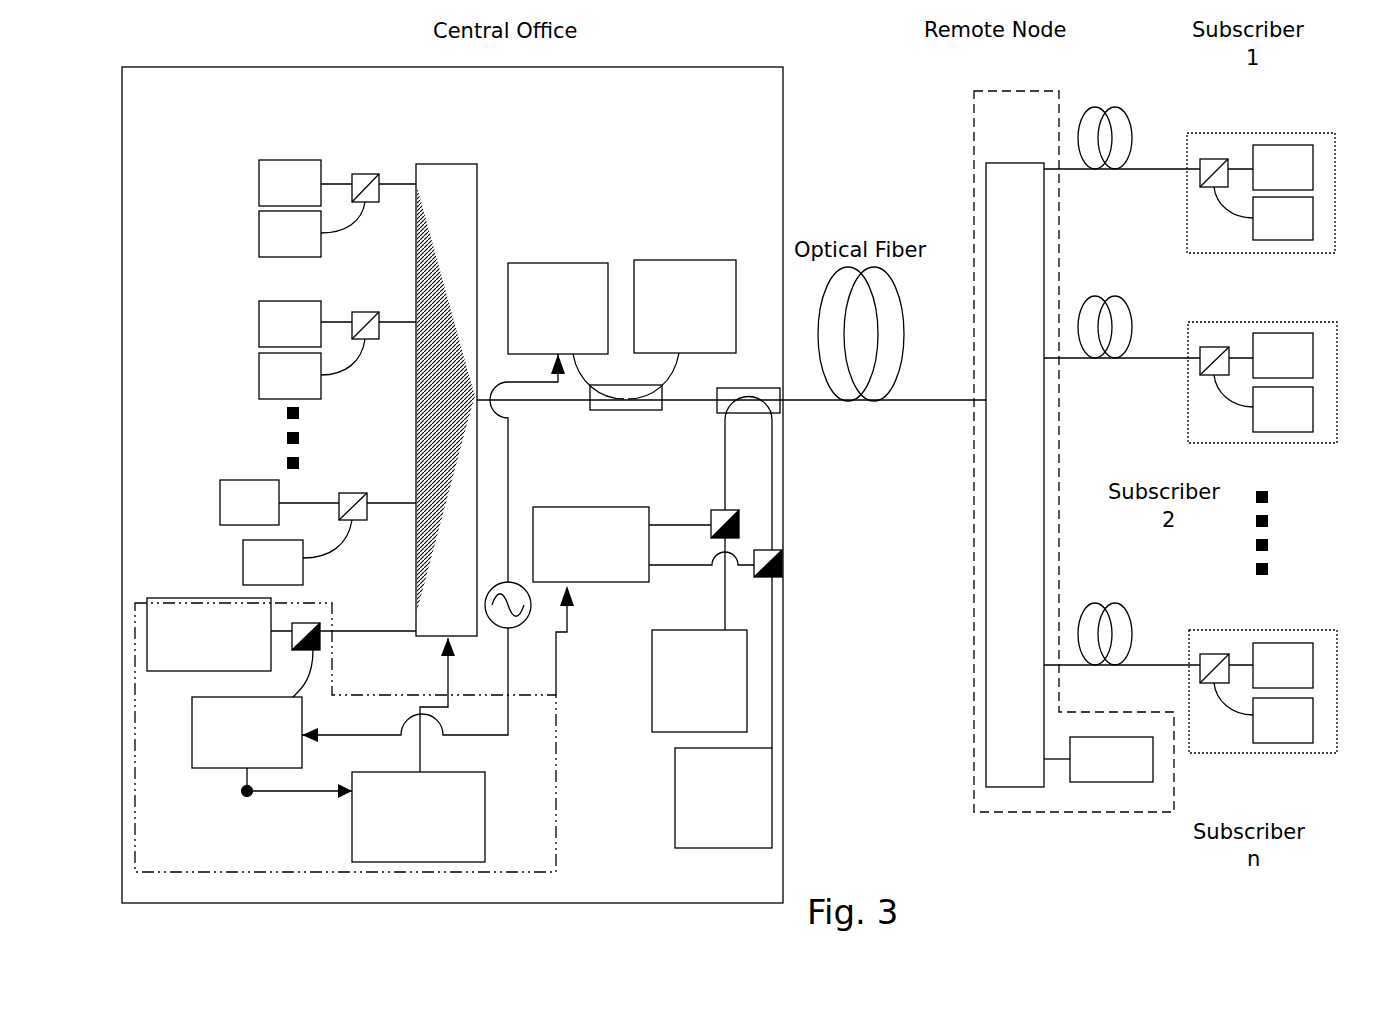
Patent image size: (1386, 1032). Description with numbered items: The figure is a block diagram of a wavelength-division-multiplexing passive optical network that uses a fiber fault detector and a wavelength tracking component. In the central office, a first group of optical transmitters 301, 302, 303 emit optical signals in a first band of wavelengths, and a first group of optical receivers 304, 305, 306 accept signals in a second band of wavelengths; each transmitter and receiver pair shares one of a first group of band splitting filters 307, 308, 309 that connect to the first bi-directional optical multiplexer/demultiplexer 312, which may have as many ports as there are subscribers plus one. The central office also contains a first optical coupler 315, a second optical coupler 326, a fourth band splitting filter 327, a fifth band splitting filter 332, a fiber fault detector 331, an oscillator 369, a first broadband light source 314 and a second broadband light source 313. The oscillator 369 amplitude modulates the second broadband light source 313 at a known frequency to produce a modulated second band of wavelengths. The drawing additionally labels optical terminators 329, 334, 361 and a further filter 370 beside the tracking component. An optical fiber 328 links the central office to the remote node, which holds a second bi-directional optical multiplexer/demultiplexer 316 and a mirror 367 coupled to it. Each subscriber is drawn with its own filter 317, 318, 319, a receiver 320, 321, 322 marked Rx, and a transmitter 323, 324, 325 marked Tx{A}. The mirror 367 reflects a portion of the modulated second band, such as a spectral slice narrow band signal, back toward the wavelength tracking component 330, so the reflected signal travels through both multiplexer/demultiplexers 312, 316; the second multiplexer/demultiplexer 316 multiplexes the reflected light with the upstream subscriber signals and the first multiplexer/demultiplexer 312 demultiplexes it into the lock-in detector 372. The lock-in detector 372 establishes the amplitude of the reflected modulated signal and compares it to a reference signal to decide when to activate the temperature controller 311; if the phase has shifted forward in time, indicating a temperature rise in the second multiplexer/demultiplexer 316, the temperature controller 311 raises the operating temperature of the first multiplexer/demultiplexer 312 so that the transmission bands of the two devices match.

The optical transmitter 301 is at (272, 160).
The optical transmitter 302 is at (258, 320).
The optical transmitter 303 is at (220, 480).
The optical receiver 304 is at (260, 220).
The optical receiver 305 is at (302, 399).
The optical receiver 306 is at (230, 575).
The band splitting filter 307 is at (360, 174).
The band splitting filter 308 is at (367, 312).
The band splitting filter 309 is at (354, 493).
The temperature controller 311 is at (498, 830).
The first bi-directional optical multiplexer/demultiplexer 312 is at (477, 163).
The second broadband light source 313 is at (537, 257).
The first broadband light source 314 is at (678, 257).
The first optical coupler 315 is at (593, 418).
The second bi-directional optical multiplexer/demultiplexer 316 is at (976, 148).
The coupler 317 is at (1207, 157).
The coupler 318 is at (1200, 370).
The coupler 319 is at (1210, 653).
The receiver Rx 320 is at (1297, 145).
The receiver Rx 321 is at (1317, 342).
The receiver Rx 322 is at (1305, 643).
The transmitter Tx{A} 323 is at (1267, 240).
The transmitter Tx{A} 324 is at (1298, 427).
The transmitter Tx{A} 325 is at (1282, 740).
The second optical coupler 326 is at (758, 388).
The fourth band splitting filter 327 is at (708, 507).
The optical fiber 328 is at (807, 407).
The optical terminator 329 is at (652, 680).
The wavelength tracking component 330 is at (556, 782).
The fiber fault detector 331 is at (627, 588).
The fifth band splitting filter 332 is at (785, 557).
The optical terminator 334 is at (675, 797).
The optical terminator 361 is at (205, 598).
The mirror 367 is at (1115, 795).
The oscillator 369 is at (532, 627).
The coupler 370 is at (320, 618).
The lock-in detector 372 is at (178, 747).